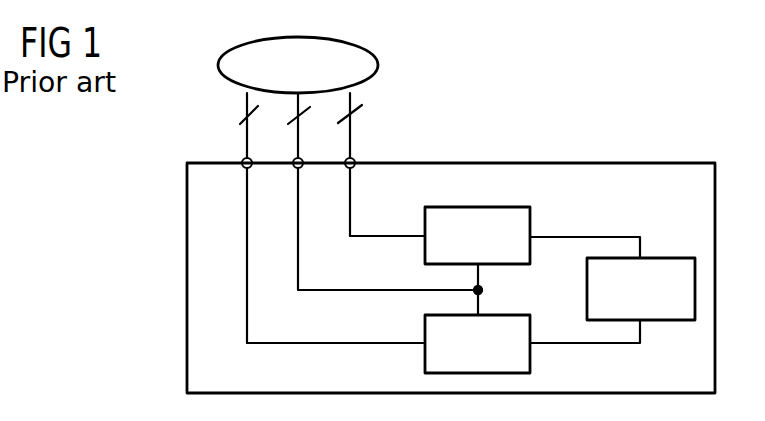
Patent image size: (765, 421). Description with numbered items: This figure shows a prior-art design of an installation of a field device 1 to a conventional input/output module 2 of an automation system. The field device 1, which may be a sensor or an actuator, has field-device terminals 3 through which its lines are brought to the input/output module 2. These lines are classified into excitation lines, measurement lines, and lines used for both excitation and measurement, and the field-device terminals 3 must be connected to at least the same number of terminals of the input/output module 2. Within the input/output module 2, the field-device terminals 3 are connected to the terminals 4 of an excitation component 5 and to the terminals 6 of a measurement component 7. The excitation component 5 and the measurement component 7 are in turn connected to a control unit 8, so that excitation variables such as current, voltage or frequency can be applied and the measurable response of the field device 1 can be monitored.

The field device 1 is at (378, 68).
The input/output module 2 is at (595, 163).
The field-device terminals 3 is at (349, 168).
The terminals of excitation component 4 is at (425, 338).
The excitation component 5 is at (497, 315).
The terminals of measurement component 6 is at (425, 231).
The measurement component 7 is at (500, 207).
The control unit 8 is at (662, 258).